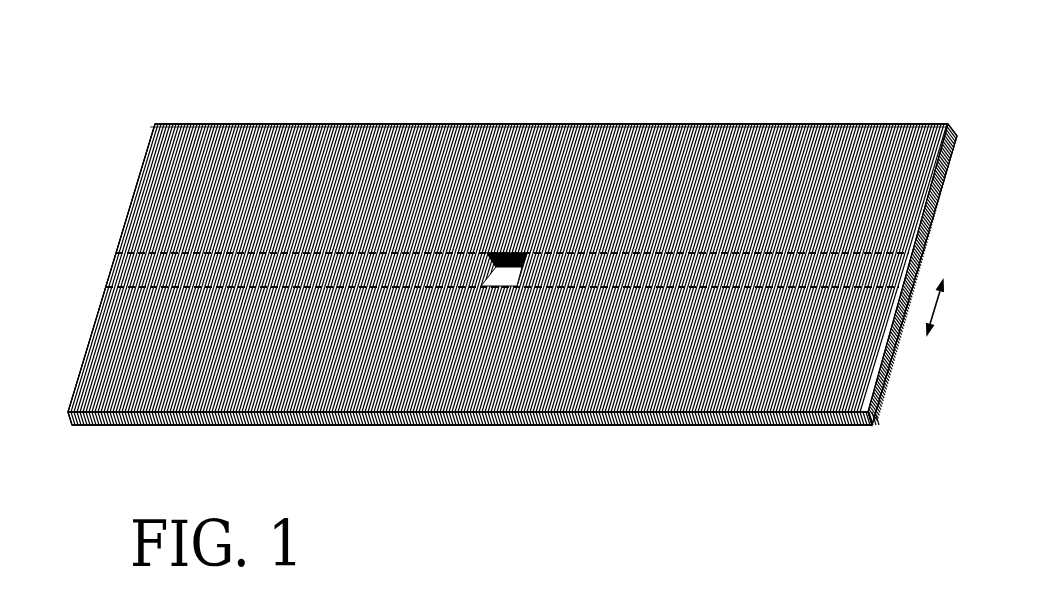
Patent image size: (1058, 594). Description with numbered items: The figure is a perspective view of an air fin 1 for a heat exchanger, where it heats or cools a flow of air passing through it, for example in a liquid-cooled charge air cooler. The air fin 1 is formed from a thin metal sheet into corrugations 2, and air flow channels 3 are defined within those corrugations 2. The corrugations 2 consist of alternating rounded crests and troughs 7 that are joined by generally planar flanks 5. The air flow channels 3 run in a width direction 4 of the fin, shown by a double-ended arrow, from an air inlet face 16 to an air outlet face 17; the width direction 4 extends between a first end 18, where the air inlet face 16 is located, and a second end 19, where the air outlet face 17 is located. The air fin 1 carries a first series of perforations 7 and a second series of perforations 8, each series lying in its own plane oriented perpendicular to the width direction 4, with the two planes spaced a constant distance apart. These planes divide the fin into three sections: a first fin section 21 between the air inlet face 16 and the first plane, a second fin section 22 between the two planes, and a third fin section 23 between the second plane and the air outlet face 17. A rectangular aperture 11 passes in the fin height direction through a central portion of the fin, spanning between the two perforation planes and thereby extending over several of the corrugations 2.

The air fin 1 is at (640, 98).
The corrugations 2 is at (853, 125).
The air flow channels 3 is at (585, 420).
The width direction 4 is at (941, 307).
The flanks 5 is at (878, 388).
The first series of perforations 7 is at (904, 290).
The second series of perforations 8 is at (915, 262).
The rectangular aperture 11 is at (500, 270).
The air inlet face 16 is at (266, 420).
The air outlet face 17 is at (287, 124).
The first end 18 is at (880, 428).
The second end 19 is at (150, 124).
The first fin section 21 is at (97, 296).
The second fin section 22 is at (108, 243).
The third fin section 23 is at (150, 127).